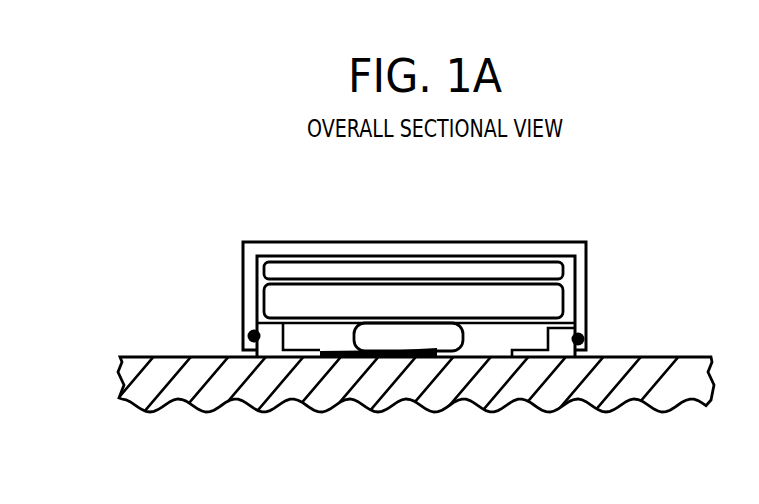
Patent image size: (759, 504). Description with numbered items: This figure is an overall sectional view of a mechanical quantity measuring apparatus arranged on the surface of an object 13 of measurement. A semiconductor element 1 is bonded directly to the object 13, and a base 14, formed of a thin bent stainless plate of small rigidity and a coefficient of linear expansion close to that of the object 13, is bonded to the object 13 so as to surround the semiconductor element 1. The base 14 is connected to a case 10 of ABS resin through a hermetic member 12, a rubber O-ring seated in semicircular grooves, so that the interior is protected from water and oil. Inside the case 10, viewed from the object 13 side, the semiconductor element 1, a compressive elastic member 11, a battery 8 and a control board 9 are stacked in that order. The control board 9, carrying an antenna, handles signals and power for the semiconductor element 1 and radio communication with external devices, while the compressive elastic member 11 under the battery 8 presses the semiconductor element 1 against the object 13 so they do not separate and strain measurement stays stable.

The semiconductor element 1 is at (403, 350).
The battery 8 is at (388, 297).
The control board 9 is at (486, 273).
The case 10 is at (585, 268).
The compressive elastic member 11 is at (422, 335).
The hermetic member 12 is at (583, 337).
The object of measurement 13 is at (215, 390).
The base 14 is at (260, 325).